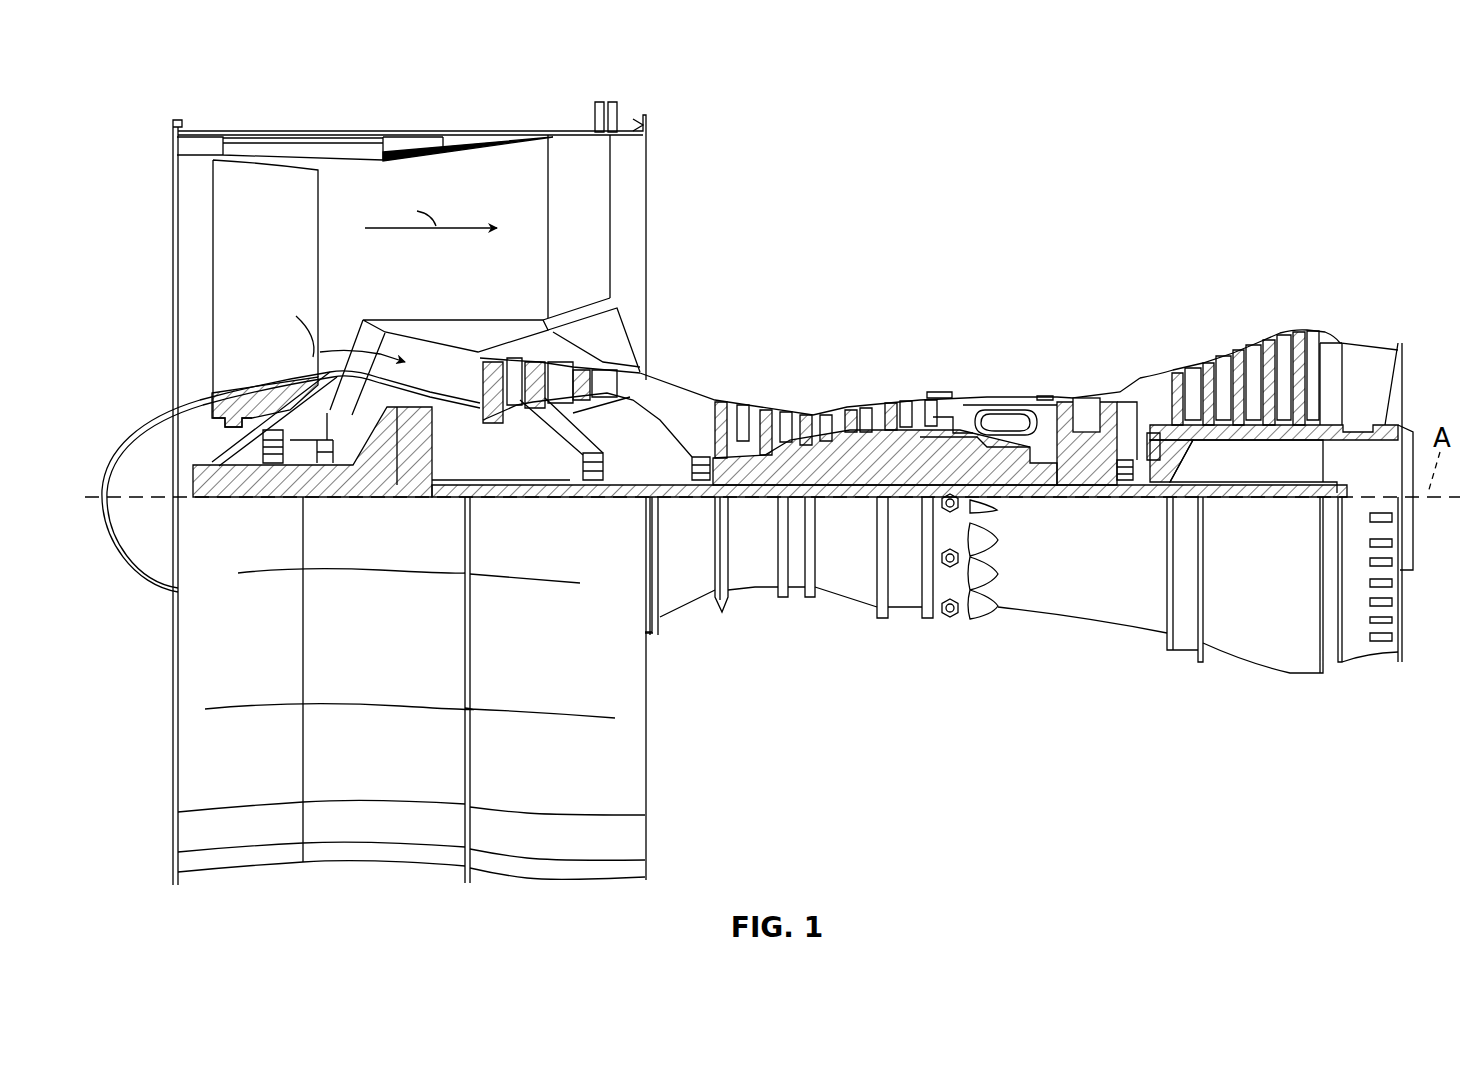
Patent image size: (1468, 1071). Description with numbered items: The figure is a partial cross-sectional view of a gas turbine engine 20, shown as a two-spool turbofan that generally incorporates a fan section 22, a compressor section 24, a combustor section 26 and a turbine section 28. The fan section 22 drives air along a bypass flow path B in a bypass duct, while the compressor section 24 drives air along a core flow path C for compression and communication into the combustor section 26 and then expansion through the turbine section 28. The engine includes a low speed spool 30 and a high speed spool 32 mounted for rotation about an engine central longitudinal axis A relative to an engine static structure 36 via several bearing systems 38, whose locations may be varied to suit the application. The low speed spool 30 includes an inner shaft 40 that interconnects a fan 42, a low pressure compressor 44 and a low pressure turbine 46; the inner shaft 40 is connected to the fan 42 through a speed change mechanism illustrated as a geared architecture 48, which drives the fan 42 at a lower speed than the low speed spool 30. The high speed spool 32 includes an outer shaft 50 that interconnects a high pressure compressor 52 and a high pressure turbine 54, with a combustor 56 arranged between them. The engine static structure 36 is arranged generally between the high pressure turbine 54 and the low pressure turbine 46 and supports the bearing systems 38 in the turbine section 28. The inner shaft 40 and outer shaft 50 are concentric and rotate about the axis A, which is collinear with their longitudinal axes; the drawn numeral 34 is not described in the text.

The gas turbine engine 20 is at (1222, 165).
The fan section 22 is at (220, 97).
The compressor section 24 is at (773, 300).
The combustor section 26 is at (970, 372).
The turbine section 28 is at (1276, 445).
The low speed spool 30 is at (823, 500).
The high speed spool 32 is at (880, 440).
The exhaust section 34 is at (1282, 585).
The engine static structure 36 is at (907, 622).
The bearing systems 38 is at (272, 458).
The inner shaft 40 is at (697, 490).
The fan 42 is at (286, 251).
The low pressure compressor 44 is at (606, 323).
The low pressure turbine 46 is at (1280, 355).
The geared architecture 48 is at (415, 470).
The outer shaft 50 is at (1030, 495).
The high pressure compressor 52 is at (827, 443).
The high pressure turbine 54 is at (1087, 394).
The combustor 56 is at (1010, 417).